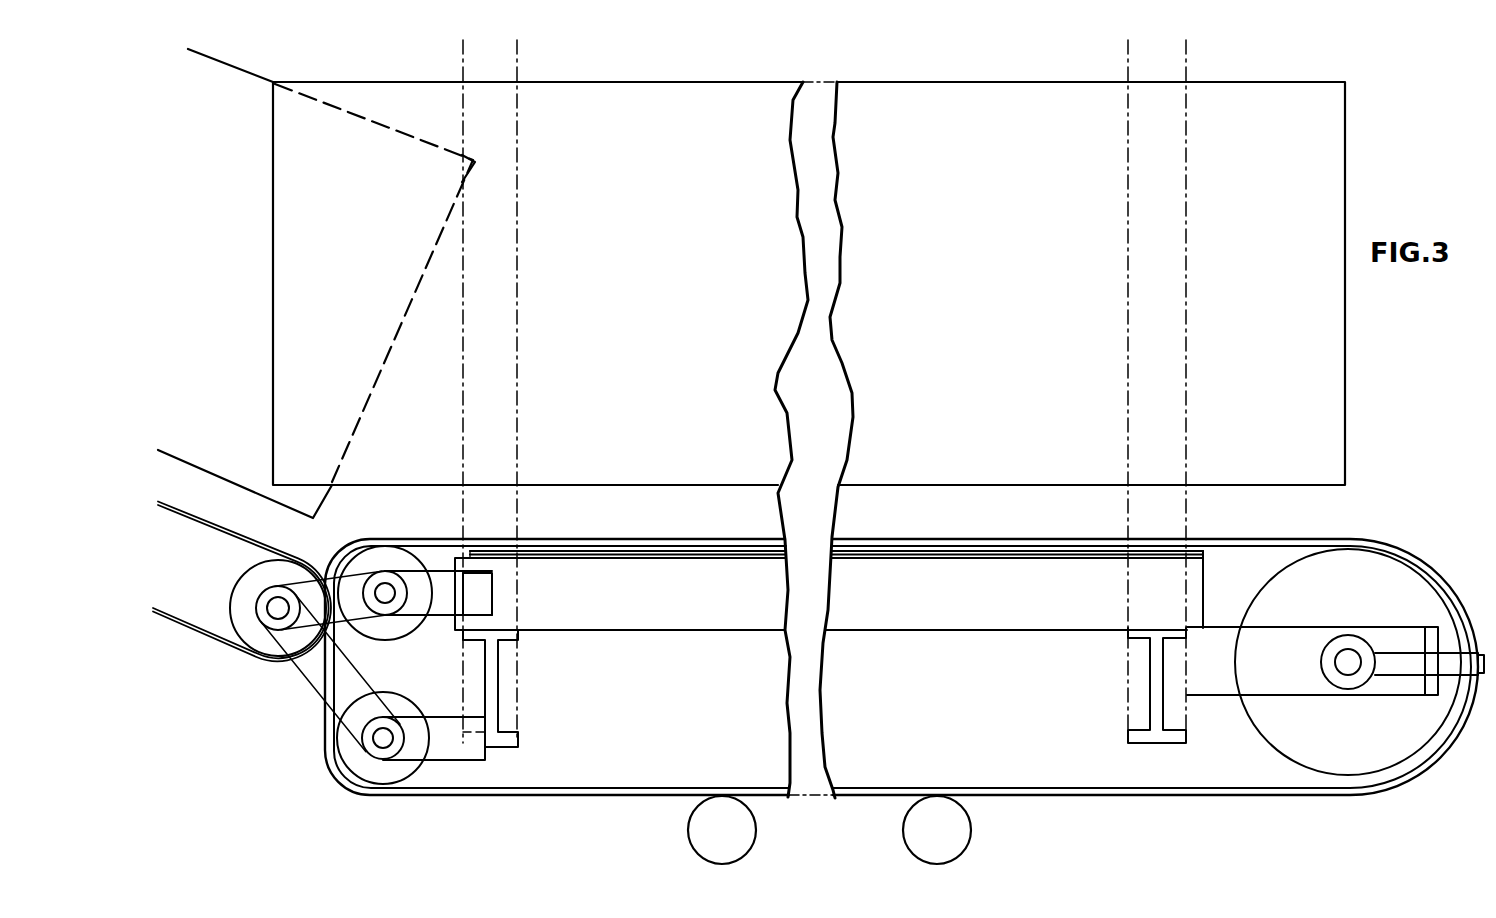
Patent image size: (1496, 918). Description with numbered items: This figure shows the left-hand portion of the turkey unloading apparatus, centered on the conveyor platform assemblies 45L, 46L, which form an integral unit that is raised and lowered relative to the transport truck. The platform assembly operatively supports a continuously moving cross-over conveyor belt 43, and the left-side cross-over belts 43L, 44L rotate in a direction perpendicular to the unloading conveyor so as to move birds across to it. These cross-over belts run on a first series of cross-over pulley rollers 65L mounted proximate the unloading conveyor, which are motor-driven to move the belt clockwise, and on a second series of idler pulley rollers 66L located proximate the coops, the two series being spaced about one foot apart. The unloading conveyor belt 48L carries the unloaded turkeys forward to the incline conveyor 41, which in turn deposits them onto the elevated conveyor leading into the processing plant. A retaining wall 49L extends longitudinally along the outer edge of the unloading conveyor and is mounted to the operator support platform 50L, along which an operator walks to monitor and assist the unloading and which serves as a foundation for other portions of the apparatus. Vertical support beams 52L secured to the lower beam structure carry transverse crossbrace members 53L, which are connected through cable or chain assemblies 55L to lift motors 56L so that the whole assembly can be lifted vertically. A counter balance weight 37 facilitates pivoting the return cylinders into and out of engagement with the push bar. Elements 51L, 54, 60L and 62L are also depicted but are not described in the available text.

The counter balance weight 37 is at (183, 518).
The incline conveyor 41 is at (1371, 524).
The cross-over conveyor belt 43 is at (737, 606).
The cross-over conveyor belt 43L is at (1343, 682).
The cross-over conveyor belt 44L is at (497, 695).
The conveyor platform assembly 45L is at (1212, 630).
The conveyor platform assembly 46L is at (1413, 577).
The unloading conveyor belt 48L is at (1472, 717).
The retaining wall 49L is at (443, 580).
The operator support platform 50L is at (372, 553).
The upper pulley shaft 51L is at (388, 577).
The vertical support beam 52L is at (432, 727).
The transverse crossbrace member 53L is at (387, 702).
The lower pulley shaft 54 is at (382, 755).
The cable or chain assembly 55L is at (340, 633).
The lift motor 56L is at (327, 720).
The drive pulley 60L is at (237, 587).
The deck plate 62L is at (578, 552).
The first cross-over pulley roller 65L is at (1072, 540).
The second cross-over idler pulley roller 66L is at (1178, 391).